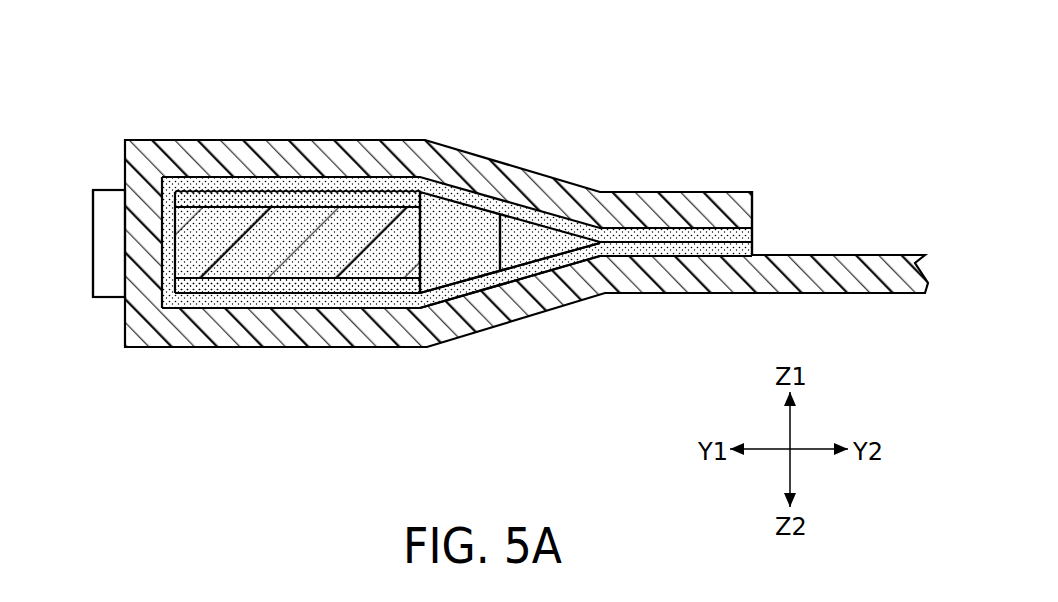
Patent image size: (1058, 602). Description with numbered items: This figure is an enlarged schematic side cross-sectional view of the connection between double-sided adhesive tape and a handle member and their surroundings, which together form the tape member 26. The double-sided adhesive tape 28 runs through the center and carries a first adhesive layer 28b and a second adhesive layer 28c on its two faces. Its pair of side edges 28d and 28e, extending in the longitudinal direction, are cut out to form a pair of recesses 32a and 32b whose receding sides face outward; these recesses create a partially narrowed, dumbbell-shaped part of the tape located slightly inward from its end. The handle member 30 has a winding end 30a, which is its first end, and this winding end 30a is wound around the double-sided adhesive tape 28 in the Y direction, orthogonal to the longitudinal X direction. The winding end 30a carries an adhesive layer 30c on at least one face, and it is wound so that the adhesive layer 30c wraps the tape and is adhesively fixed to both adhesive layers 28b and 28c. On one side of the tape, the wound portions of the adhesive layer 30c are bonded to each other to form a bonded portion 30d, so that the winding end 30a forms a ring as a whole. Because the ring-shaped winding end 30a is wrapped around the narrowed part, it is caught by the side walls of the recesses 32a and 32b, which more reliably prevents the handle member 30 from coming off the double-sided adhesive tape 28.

The tape member 26 is at (72, 40).
The double-sided adhesive tape 28 is at (272, 292).
The first adhesive layer 28b is at (213, 287).
The second adhesive layer 28c is at (280, 200).
The side edge 28d is at (93, 240).
The side edge 28e is at (503, 254).
The handle member 30 is at (843, 300).
The winding end 30a is at (357, 158).
The adhesive layer 30c is at (342, 304).
The bonded portion 30d is at (703, 210).
The recess 32a is at (107, 212).
The recess 32b is at (467, 222).